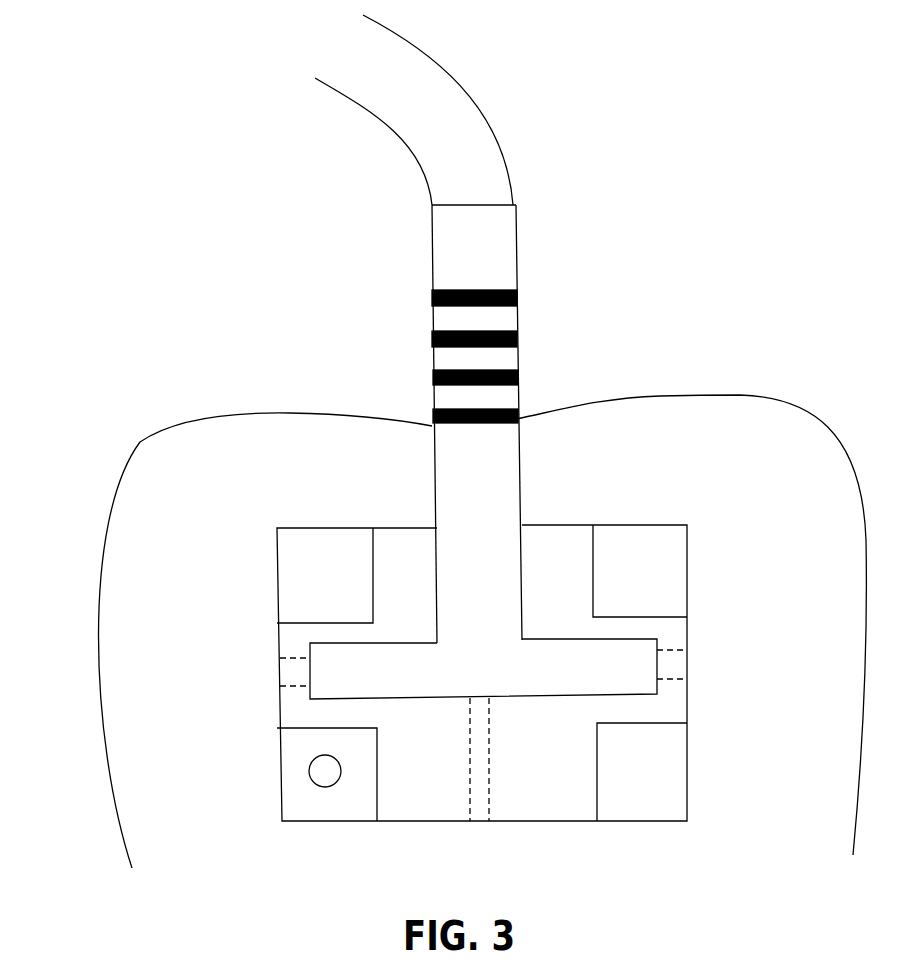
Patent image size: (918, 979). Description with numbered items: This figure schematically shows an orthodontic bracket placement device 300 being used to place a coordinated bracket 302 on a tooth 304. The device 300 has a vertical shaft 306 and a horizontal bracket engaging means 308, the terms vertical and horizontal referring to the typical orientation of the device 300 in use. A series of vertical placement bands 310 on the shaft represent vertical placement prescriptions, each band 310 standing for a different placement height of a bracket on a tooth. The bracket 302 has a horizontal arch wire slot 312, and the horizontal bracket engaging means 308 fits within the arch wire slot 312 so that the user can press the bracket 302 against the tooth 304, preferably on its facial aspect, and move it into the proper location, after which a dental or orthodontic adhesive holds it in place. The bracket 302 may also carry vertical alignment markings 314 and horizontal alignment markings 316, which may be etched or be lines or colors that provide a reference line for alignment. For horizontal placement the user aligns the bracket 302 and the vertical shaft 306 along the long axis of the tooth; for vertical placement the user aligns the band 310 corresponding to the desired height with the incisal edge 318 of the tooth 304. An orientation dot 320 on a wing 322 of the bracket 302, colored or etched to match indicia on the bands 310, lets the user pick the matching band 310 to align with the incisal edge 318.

The orthodontic bracket placement device 300 is at (446, 464).
The coordinated bracket 302 is at (572, 555).
The tooth 304 is at (773, 467).
The vertical shaft 306 is at (460, 249).
The horizontal bracket engaging means 308 is at (573, 680).
The vertical placement bands 310 is at (516, 422).
The horizontal arch wire slot 312 is at (698, 612).
The vertical alignment markings 314 is at (482, 795).
The horizontal alignment markings 316 is at (290, 673).
The incisal edge 318 is at (283, 403).
The orientation dot 320 is at (322, 768).
The wing 322 is at (293, 812).